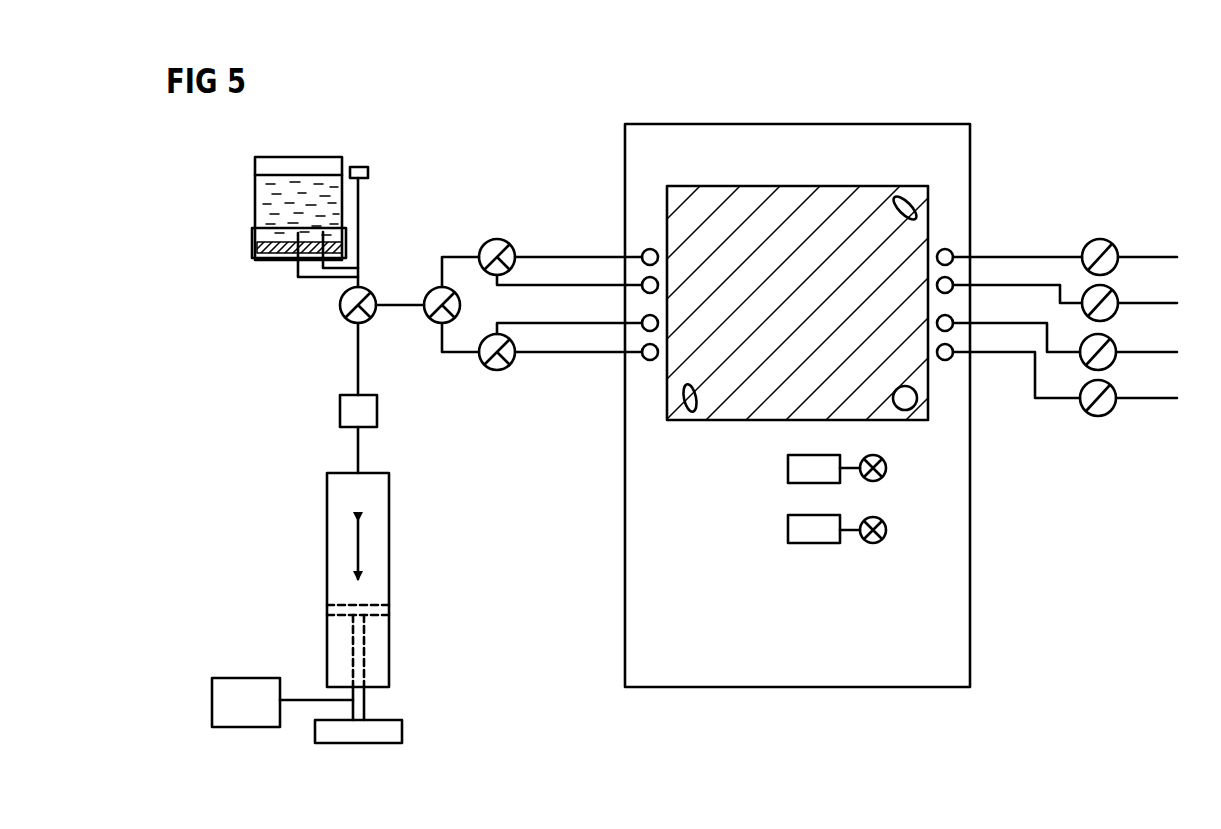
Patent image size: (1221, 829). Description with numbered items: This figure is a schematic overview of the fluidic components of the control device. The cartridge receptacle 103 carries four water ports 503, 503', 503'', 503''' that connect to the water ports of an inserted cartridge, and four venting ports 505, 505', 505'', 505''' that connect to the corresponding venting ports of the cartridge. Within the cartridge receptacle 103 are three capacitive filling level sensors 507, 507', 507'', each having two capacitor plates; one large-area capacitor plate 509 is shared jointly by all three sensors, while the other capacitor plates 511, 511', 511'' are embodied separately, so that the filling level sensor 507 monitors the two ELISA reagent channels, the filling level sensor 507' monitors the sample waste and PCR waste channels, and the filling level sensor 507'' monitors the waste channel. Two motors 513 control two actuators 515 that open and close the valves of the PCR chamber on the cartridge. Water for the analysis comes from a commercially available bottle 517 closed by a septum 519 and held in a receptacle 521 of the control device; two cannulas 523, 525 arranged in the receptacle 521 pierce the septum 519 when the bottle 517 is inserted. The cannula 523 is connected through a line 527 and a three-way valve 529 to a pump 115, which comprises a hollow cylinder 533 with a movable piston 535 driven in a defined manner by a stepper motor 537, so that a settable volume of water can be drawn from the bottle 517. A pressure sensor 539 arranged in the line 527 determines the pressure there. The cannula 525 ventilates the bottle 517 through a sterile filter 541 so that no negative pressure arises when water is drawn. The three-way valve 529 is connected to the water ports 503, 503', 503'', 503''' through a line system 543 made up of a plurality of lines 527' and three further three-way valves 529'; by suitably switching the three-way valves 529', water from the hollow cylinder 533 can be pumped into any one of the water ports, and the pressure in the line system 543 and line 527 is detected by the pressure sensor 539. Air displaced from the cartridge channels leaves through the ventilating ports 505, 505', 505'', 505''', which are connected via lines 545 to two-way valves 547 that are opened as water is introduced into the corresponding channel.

The cartridge receptacle 103 is at (970, 534).
The pump 115 is at (356, 585).
The water port 503 is at (649, 400).
The water port 503' is at (620, 364).
The water port 503'' is at (619, 245).
The water port 503''' is at (654, 210).
The venting port 505 is at (982, 391).
The venting port 505' is at (983, 359).
The venting port 505'' is at (985, 251).
The venting port 505''' is at (988, 220).
The filling level sensor 507 is at (743, 440).
The filling level sensor 507' is at (941, 160).
The filling level sensor 507'' is at (925, 462).
The capacitor plate 509 is at (800, 186).
The capacitor plate 511 is at (702, 433).
The capacitor plate 511' is at (894, 177).
The capacitor plate 511'' is at (931, 421).
The motor 513 is at (788, 470).
The actuator 515 is at (885, 479).
The bottle 517 is at (255, 171).
The septum 519 is at (283, 265).
The receptacle 521 is at (252, 250).
The cannula 523 is at (292, 240).
The cannula 525 is at (334, 244).
The line 527 is at (323, 356).
The lines 527' is at (526, 308).
The three-way valve 529 is at (385, 328).
The three-way valves 529' is at (475, 306).
The hollow cylinder 533 is at (390, 656).
The piston 535 is at (337, 618).
The stepper motor 537 is at (246, 678).
The pressure sensor 539 is at (340, 412).
The sterile filter 541 is at (369, 171).
The line system 543 is at (529, 158).
The lines 545 is at (1063, 283).
The two-way valves 547 is at (1115, 298).